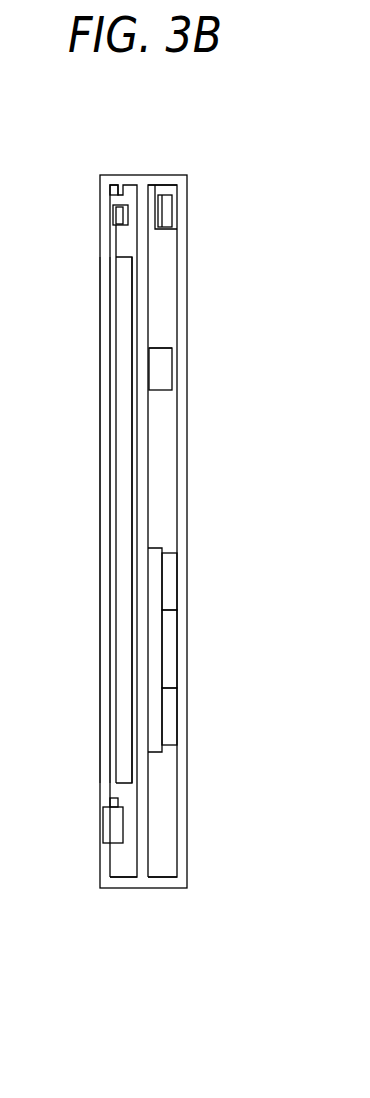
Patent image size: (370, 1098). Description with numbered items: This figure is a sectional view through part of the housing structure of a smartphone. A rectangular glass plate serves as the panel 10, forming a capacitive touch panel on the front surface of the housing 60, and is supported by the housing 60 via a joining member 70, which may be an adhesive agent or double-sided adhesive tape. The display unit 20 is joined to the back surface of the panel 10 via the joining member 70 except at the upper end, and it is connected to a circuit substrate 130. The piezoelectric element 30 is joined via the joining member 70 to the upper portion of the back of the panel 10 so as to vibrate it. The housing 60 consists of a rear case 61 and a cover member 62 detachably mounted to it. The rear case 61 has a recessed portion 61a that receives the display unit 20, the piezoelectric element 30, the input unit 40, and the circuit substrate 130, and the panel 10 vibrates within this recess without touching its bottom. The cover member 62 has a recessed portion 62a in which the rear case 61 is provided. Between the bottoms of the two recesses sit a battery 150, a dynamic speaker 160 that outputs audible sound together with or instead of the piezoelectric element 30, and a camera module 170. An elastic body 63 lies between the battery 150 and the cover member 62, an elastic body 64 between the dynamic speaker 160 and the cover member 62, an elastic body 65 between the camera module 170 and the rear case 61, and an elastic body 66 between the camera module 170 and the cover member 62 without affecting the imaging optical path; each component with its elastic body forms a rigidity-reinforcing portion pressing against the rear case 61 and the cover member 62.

The panel 10 is at (104, 303).
The display unit 20 is at (122, 417).
The piezoelectric element 30 is at (121, 225).
The input unit 40 is at (110, 828).
The housing 60 is at (149, 158).
The rear case 61 is at (127, 175).
The recessed portion 61a is at (137, 858).
The cover member 62 is at (182, 495).
The recessed portion 62a is at (177, 858).
The elastic body 63 is at (170, 580).
The elastic body 64 is at (173, 372).
The elastic body 65 is at (149, 233).
The elastic body 66 is at (172, 223).
The joining member 70 is at (113, 218).
The circuit substrate 130 is at (133, 472).
The battery 150 is at (155, 648).
The dynamic speaker 160 is at (160, 362).
The camera module 170 is at (165, 209).